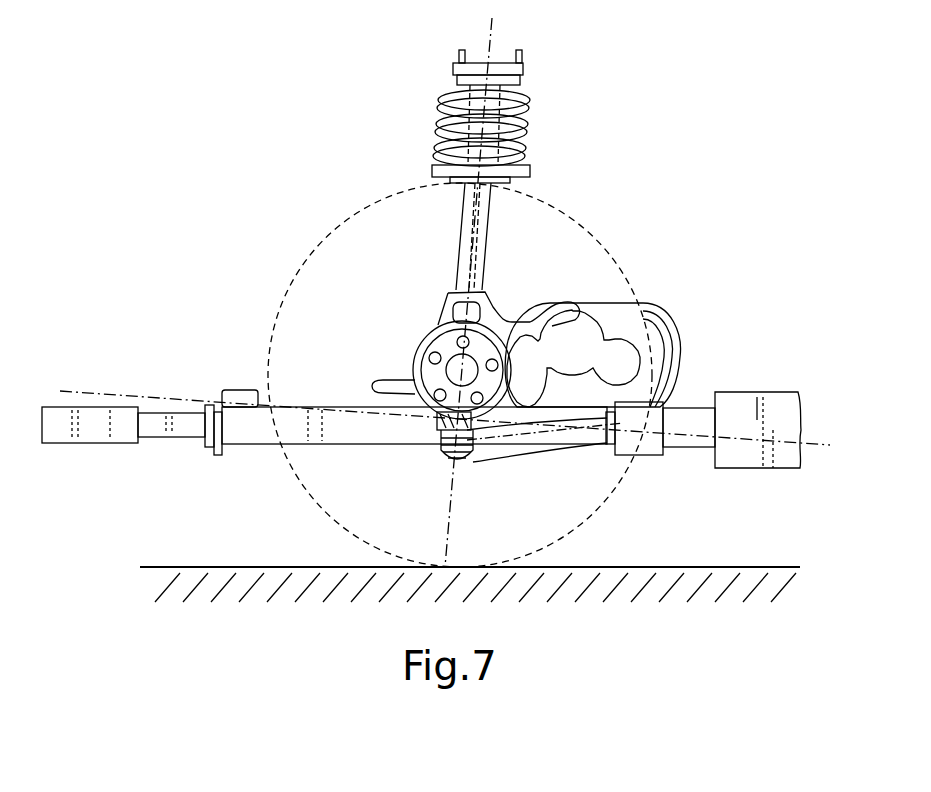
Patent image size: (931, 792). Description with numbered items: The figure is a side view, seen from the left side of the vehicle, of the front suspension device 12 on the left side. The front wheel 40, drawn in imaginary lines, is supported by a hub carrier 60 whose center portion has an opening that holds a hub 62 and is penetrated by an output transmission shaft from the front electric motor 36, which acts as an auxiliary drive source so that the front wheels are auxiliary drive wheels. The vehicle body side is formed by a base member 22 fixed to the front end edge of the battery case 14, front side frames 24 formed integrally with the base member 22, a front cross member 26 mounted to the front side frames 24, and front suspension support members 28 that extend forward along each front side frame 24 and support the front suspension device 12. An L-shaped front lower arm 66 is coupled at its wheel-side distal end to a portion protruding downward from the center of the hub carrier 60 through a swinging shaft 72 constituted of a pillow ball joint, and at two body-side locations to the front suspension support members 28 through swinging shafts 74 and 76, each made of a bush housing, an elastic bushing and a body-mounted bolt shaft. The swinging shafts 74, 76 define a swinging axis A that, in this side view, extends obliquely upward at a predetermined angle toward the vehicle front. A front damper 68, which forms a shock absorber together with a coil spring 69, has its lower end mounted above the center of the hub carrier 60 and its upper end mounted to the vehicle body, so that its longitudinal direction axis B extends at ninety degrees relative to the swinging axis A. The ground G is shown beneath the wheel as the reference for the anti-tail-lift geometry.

The front suspension device 12 is at (568, 70).
The battery case 14 is at (775, 392).
The base member 22 is at (706, 402).
The front side frame 24 is at (252, 447).
The front cross member 26 is at (240, 388).
The front suspension support member 28 is at (690, 447).
The front electric motor 36 is at (656, 318).
The front wheel 40 is at (352, 213).
The hub carrier 60 is at (515, 318).
The hub 62 is at (428, 336).
The front lower arm 66 is at (583, 447).
The front damper 68 is at (495, 203).
The coil spring 69 is at (528, 120).
The swinging shaft 72 is at (440, 458).
The swinging shaft 74 is at (607, 448).
The swinging shaft 76 is at (426, 434).
The swinging axis A is at (72, 392).
The longitudinal direction axis B is at (498, 33).
The ground G is at (743, 565).